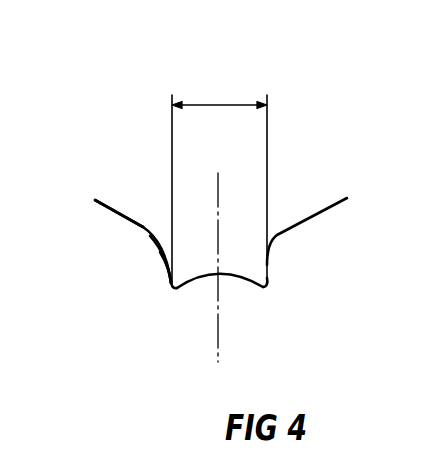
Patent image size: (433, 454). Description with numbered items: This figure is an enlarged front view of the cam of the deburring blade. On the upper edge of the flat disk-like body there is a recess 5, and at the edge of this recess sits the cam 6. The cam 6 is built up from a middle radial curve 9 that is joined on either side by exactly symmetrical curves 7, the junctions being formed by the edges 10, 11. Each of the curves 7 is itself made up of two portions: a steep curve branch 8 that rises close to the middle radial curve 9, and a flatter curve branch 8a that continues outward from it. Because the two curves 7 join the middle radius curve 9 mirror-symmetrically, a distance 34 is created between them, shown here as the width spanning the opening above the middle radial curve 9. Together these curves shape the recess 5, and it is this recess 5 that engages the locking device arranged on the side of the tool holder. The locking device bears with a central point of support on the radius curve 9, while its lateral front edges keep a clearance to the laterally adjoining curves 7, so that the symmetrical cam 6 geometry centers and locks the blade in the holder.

The recess 5 is at (147, 200).
The cam 6 is at (134, 224).
The curves 7 is at (158, 244).
The steep curve branch 8 is at (164, 252).
The flatter curve branch 8a is at (152, 238).
The middle radial curve 9 is at (208, 278).
The edge 10 is at (176, 291).
The edge 11 is at (269, 288).
The distance 34 is at (223, 105).